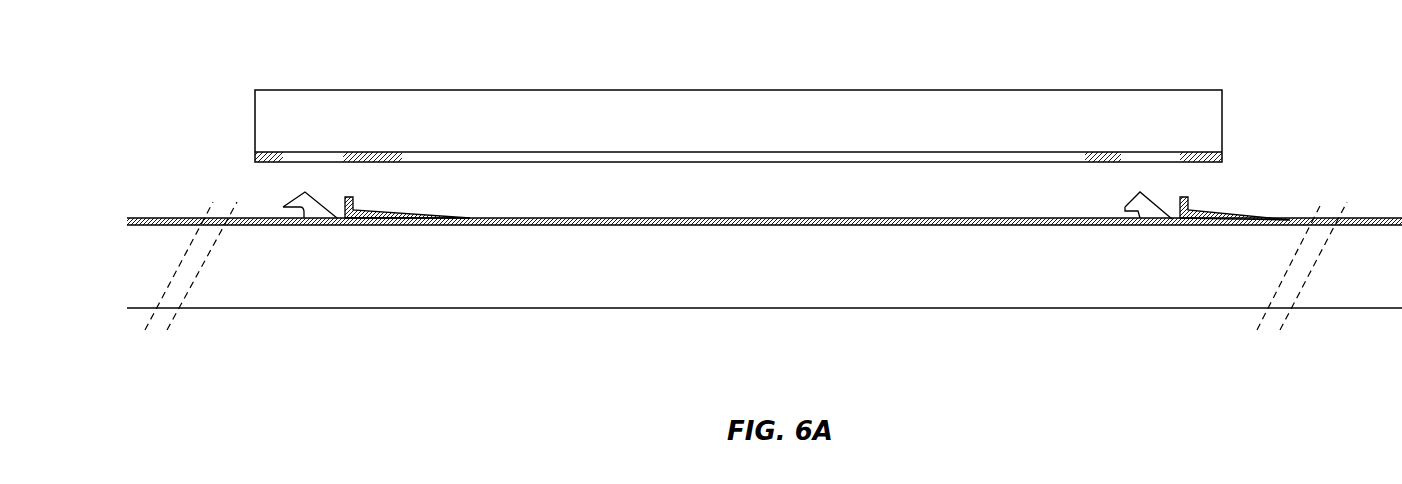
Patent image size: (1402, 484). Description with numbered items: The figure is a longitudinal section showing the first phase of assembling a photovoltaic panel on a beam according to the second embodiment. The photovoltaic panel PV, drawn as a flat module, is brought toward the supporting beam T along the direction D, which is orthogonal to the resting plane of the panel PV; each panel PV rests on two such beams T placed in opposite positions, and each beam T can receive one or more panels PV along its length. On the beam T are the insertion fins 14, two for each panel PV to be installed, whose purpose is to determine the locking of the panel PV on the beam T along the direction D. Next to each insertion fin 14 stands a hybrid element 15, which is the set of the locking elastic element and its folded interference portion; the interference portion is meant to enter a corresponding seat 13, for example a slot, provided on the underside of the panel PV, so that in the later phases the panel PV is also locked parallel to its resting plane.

The seat 13 is at (315, 147).
The insertion fin 14 is at (280, 206).
The hybrid element 15 is at (401, 206).
The photovoltaic panel PV is at (1237, 91).
The direction D is at (240, 160).
The supporting beam T is at (119, 186).